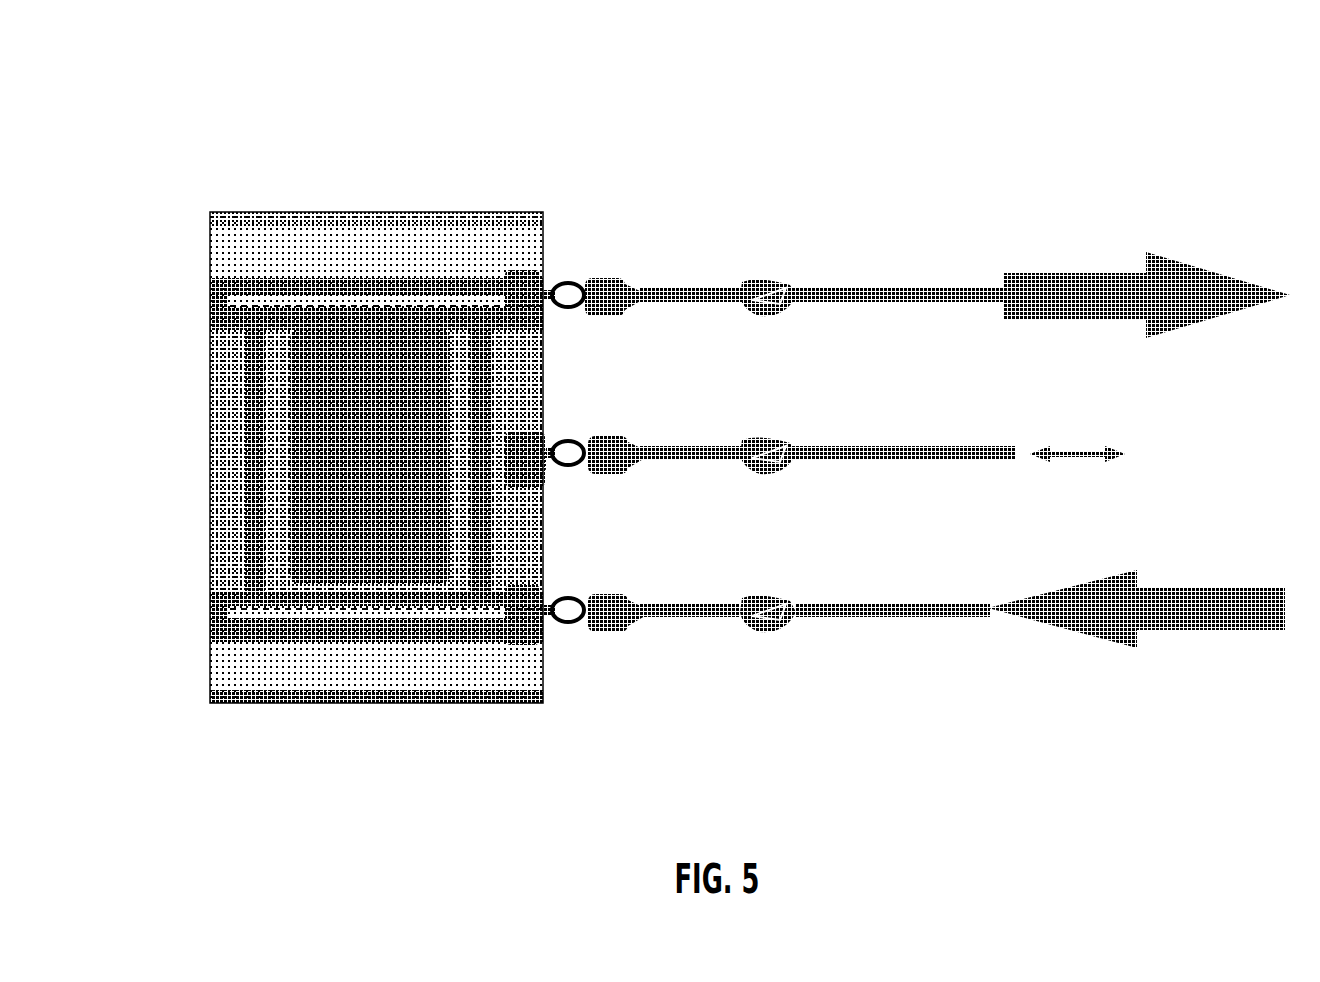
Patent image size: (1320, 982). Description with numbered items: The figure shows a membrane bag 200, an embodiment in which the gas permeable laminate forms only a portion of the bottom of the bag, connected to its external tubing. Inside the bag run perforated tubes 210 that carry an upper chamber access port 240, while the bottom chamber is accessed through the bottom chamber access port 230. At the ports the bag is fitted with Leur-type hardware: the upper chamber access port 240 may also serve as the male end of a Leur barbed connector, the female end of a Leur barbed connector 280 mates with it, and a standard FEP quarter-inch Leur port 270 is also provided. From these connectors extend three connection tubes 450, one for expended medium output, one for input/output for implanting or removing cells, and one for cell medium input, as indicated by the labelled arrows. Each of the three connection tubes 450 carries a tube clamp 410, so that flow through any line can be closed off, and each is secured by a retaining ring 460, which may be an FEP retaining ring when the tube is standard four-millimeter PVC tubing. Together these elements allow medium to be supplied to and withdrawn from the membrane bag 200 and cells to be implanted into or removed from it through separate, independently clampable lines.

The membrane bag 200 is at (651, 147).
The perforated tubes 210 is at (329, 457).
The bottom chamber access port 230 is at (611, 445).
The upper chamber access port 240 is at (612, 623).
The Leur port 270 is at (561, 452).
The female end of Leur barbed connector 280 is at (590, 628).
The tube clamp 410 is at (757, 283).
The connection tubes 450 is at (703, 457).
The retaining ring 460 is at (632, 621).